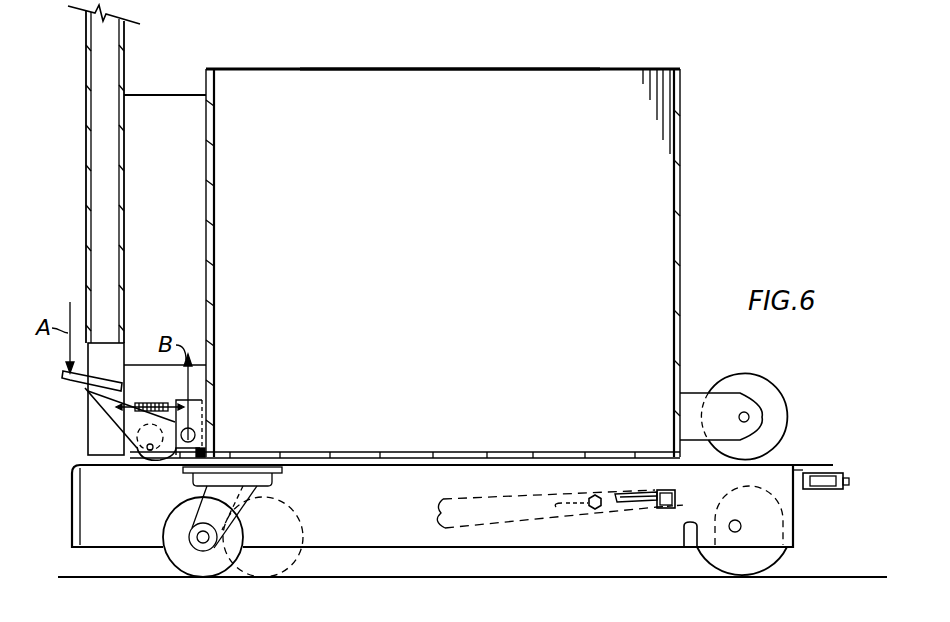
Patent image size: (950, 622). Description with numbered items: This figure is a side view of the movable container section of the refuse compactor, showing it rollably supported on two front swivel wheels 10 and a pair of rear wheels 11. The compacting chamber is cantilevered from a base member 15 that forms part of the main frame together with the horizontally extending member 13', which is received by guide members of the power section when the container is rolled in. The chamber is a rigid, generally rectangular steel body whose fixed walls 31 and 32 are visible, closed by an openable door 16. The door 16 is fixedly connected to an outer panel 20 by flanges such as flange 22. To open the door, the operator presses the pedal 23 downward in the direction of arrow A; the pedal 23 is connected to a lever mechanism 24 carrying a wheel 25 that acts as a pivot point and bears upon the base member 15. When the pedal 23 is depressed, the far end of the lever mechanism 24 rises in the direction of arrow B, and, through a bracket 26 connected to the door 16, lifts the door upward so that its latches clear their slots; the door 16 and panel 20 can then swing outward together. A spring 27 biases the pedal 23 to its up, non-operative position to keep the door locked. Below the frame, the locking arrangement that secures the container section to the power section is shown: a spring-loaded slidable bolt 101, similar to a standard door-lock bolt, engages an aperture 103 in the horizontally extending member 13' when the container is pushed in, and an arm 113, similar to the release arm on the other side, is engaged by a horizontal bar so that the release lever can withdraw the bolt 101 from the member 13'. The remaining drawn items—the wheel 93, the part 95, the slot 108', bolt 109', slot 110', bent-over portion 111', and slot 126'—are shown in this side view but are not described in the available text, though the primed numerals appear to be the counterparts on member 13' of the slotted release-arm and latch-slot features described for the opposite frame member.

The front swivel wheels 10 is at (163, 560).
The rear wheels 11 is at (775, 546).
The horizontally extending member 13' is at (827, 444).
The base member 15 is at (172, 462).
The door 16 is at (214, 187).
The outer panel 20 is at (86, 172).
The flange 22 is at (178, 95).
The pedal 23 is at (70, 382).
The lever mechanism 24 is at (118, 416).
The wheel 25 is at (138, 460).
The bracket 26 is at (204, 412).
The spring 27 is at (164, 384).
The fixed wall 31 is at (487, 77).
The fixed wall 32 is at (681, 176).
The wheel 93 is at (770, 386).
The bracket 95 is at (846, 483).
The bolt 101 is at (676, 500).
The aperture 103 is at (666, 524).
The pin 108' is at (548, 466).
The nut 109' is at (592, 467).
The link 110' is at (636, 464).
The rod 111' is at (677, 481).
The arm 113 is at (432, 517).
The slot 126' is at (662, 550).